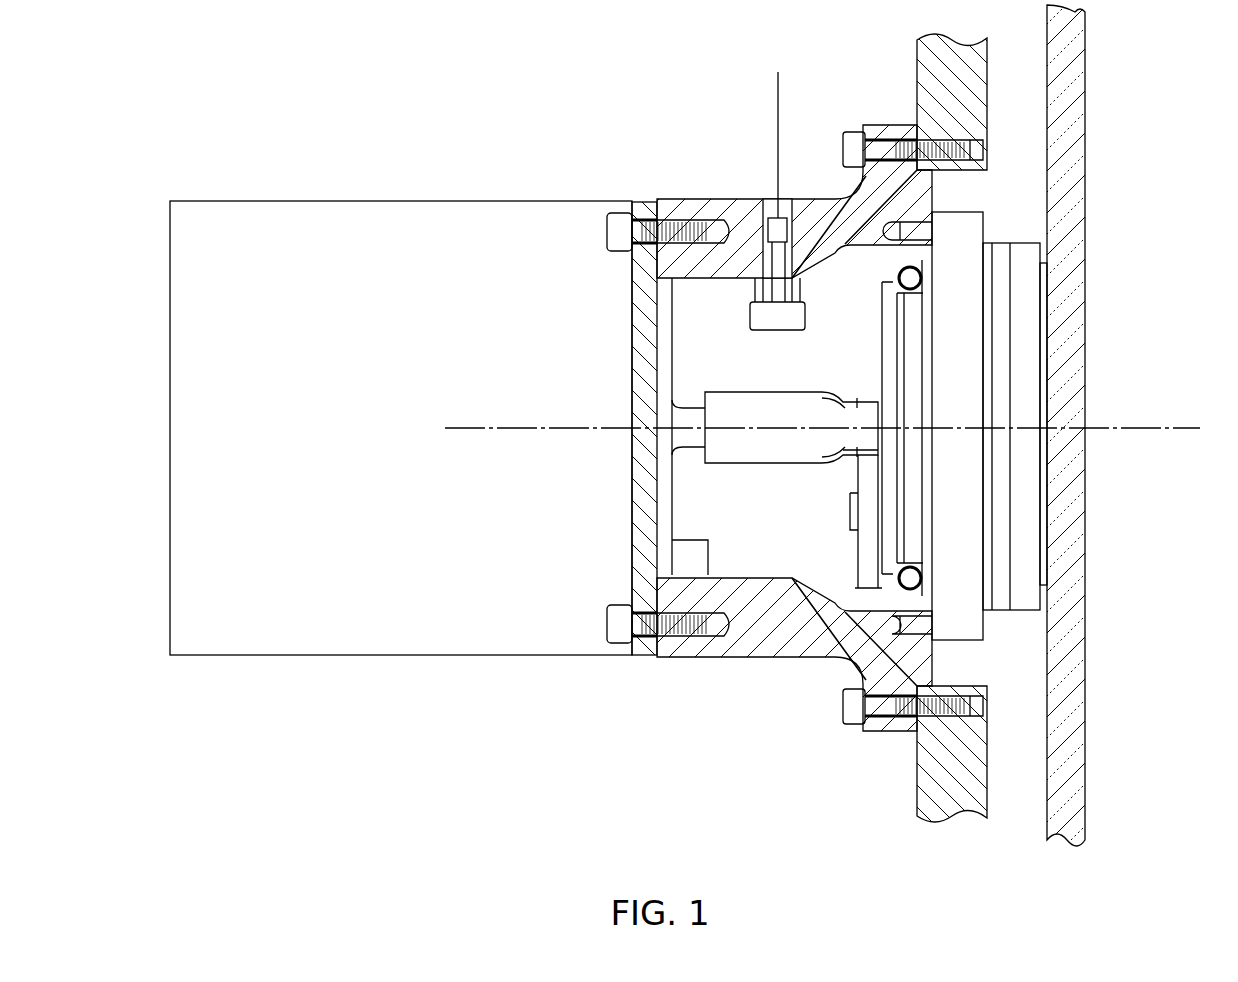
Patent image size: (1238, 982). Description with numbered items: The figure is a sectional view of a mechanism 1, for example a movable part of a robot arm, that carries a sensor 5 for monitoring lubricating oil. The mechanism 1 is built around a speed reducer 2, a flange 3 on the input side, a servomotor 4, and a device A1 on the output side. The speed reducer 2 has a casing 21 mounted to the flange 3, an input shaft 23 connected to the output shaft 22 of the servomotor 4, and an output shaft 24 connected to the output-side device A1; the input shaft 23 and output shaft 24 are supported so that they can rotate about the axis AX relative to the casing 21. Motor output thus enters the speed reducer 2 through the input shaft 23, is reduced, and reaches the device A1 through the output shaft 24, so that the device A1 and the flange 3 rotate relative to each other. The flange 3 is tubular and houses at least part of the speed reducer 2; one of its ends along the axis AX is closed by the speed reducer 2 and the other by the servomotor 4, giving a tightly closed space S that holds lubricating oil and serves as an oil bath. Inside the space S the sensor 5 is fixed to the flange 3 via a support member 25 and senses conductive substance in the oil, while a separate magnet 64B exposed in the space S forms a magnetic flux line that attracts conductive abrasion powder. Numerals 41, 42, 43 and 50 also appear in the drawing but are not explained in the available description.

The mechanism 1 is at (769, 395).
The speed reducer 2 is at (1050, 425).
The flange 3 is at (807, 426).
The servomotor 4 is at (265, 640).
The sensor 5 is at (752, 316).
The casing 21 is at (965, 218).
The output shaft 22 is at (684, 445).
The input shaft 23 is at (745, 397).
The output shaft 24 is at (1052, 293).
The support member 25 is at (765, 293).
The bolt 41 is at (800, 250).
The insertion hole 42 is at (803, 262).
The access hole 43 is at (794, 208).
The tool 50 is at (776, 124).
The separate magnet 64B is at (683, 627).
The space S is at (745, 532).
The device A1 is at (1075, 190).
The axis AX is at (1150, 422).